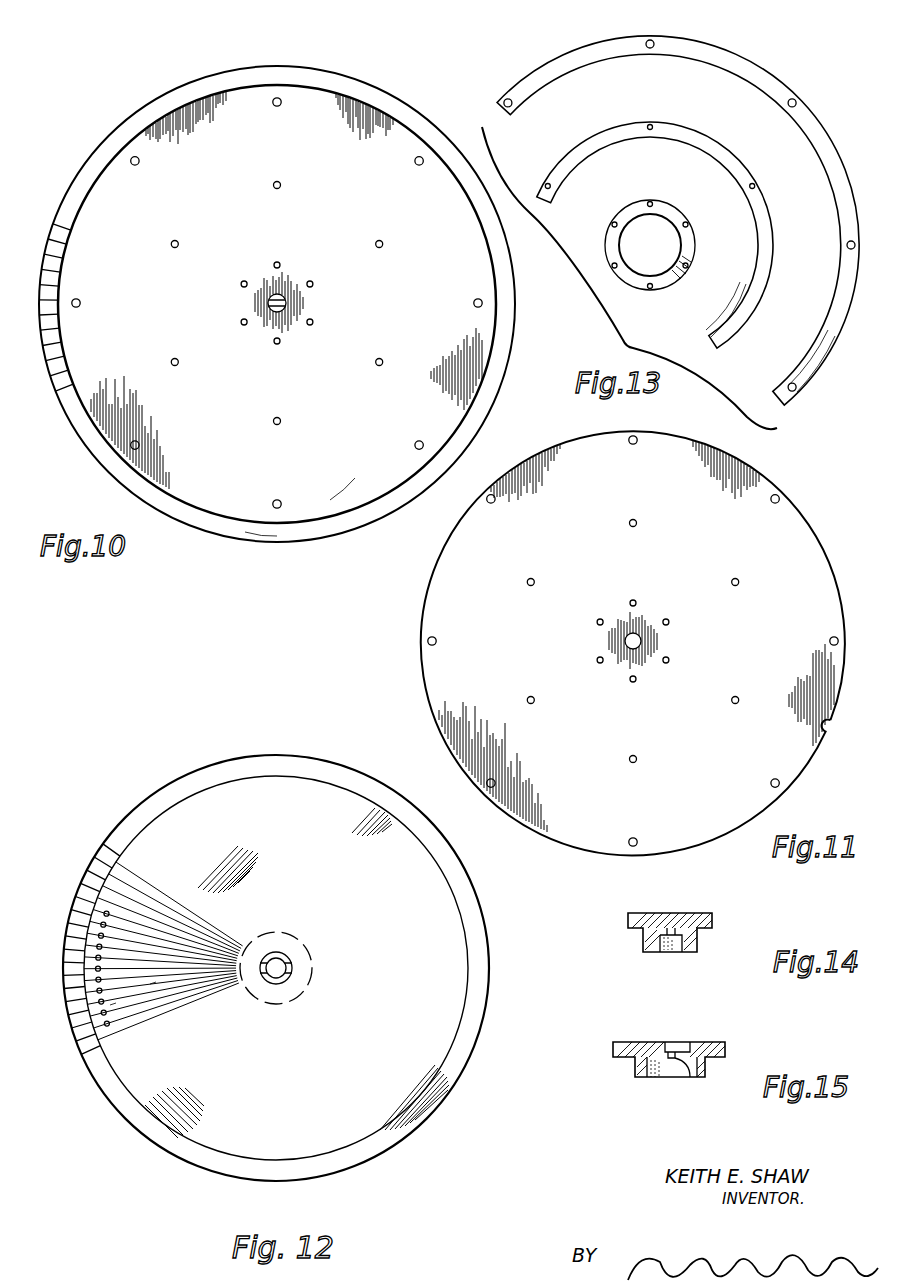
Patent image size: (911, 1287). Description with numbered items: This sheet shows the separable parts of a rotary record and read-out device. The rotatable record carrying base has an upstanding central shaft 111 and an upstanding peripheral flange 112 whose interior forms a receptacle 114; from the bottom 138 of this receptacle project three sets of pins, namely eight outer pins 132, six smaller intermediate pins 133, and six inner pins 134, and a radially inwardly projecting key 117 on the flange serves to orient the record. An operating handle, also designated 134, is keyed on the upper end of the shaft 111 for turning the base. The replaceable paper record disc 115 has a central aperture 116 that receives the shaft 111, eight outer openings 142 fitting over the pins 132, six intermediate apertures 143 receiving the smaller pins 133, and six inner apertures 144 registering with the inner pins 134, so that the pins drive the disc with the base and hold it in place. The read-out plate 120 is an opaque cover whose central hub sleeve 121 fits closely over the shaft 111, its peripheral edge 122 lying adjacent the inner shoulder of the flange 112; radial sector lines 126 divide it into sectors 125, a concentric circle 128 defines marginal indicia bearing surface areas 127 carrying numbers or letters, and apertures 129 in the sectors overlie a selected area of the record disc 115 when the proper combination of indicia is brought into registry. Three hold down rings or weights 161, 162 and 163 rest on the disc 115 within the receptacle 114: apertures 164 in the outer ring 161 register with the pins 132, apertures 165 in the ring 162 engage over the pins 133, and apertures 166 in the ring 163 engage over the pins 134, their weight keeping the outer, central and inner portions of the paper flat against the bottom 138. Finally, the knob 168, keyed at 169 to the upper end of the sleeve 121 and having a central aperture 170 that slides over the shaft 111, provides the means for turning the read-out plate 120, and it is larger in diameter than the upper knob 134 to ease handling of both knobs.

In FIG. 10, the shaft 111 is at (287, 302).
In FIG. 10, the peripheral flange 112 is at (283, 533).
In FIG. 10, the receptacle 114 is at (247, 512).
In FIG. 11, the record disc 115 is at (757, 727).
In FIG. 11, the central aperture 116 is at (641, 641).
In FIG. 10, the key 117 is at (468, 392).
In FIG. 12, the read-out plate 120 is at (418, 1028).
In FIG. 12, the hub sleeve 121 is at (290, 955).
In FIG. 12, the peripheral edge 122 is at (392, 1143).
In FIG. 12, the sectors 125 is at (152, 984).
In FIG. 12, the sector lines 126 is at (111, 1005).
In FIG. 12, the indicia bearing surface areas 127 is at (82, 1046).
In FIG. 12, the circle 128 is at (258, 1158).
In FIG. 12, the apertures 129 is at (102, 957).
In FIG. 10, the pins 132 is at (416, 165).
In FIG. 10, the smaller pins 133 is at (281, 423).
In FIG. 10, the operating handle 134 is at (309, 326).
In FIG. 14, the operating handle 134 is at (699, 905).
In FIG. 10, the bottom 138 is at (350, 476).
In FIG. 11, the openings 142 is at (630, 444).
In FIG. 11, the apertures 143 is at (637, 762).
In FIG. 11, the apertures 144 is at (636, 682).
In FIG. 13, the hold down ring 161 is at (797, 380).
In FIG. 13, the hold down ring 162 is at (769, 258).
In FIG. 13, the hold down ring 163 is at (690, 247).
In FIG. 13, the apertures 164 is at (847, 247).
In FIG. 13, the apertures 165 is at (756, 187).
In FIG. 13, the apertures 166 is at (689, 225).
In FIG. 15, the knob 168 is at (703, 1043).
In FIG. 15, the key 169 is at (673, 1062).
In FIG. 15, the central aperture 170 is at (694, 1025).